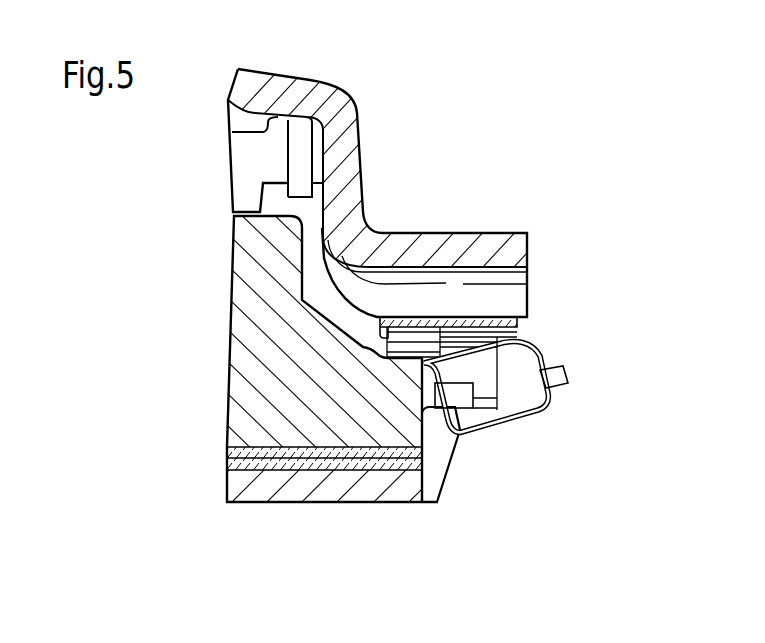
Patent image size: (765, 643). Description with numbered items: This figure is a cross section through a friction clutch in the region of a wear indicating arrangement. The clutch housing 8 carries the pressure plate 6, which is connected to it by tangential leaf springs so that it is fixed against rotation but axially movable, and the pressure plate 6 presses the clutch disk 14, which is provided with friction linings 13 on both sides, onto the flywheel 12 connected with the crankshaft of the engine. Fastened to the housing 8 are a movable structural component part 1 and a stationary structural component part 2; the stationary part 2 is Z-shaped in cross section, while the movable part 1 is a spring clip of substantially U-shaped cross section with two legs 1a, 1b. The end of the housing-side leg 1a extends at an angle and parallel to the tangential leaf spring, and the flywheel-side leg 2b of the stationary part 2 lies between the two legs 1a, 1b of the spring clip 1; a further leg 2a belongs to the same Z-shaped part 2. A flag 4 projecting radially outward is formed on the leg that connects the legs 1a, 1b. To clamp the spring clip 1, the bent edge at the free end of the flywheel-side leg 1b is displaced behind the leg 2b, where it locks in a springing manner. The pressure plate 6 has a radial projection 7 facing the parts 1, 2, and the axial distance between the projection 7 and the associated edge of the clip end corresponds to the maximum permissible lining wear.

The movable structural component part 1 is at (545, 362).
The leg on the housing side 1a is at (484, 347).
The flywheel-side leg 1b is at (541, 409).
The stationary structural component part 2 is at (504, 375).
The leg of clamping ring 2a is at (487, 394).
The flywheel-side leg of the stationary structural component part 2b is at (490, 418).
The flag 4 is at (569, 382).
The pressure plate 6 is at (247, 360).
The radial projection 7 is at (453, 398).
The clutch housing 8 is at (483, 240).
The flywheel 12 is at (315, 492).
The friction linings 13 is at (237, 466).
The clutch disk 14 is at (269, 468).